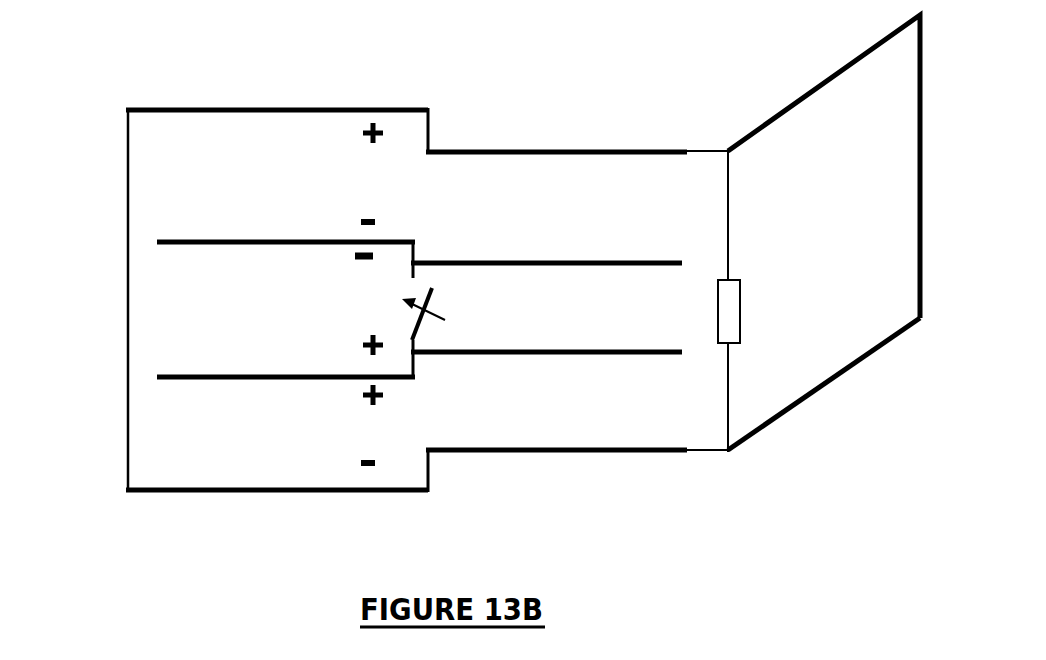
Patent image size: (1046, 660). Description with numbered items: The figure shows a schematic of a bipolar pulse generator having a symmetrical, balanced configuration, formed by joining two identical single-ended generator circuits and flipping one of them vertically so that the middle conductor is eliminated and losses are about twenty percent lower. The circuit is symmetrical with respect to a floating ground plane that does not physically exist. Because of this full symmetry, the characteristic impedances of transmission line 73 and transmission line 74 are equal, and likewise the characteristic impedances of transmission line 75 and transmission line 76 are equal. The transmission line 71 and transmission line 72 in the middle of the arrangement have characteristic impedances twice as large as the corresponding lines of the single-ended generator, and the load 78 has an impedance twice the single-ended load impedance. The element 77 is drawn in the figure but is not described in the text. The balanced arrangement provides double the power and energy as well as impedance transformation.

The transmission line 71 is at (495, 322).
The transmission line 72 is at (173, 302).
The transmission line 73 is at (268, 145).
The transmission line 74 is at (178, 455).
The transmission line 75 is at (545, 172).
The transmission line 76 is at (617, 430).
The load conductor plane (2Zs1) 77 is at (823, 143).
The load 78 is at (748, 322).